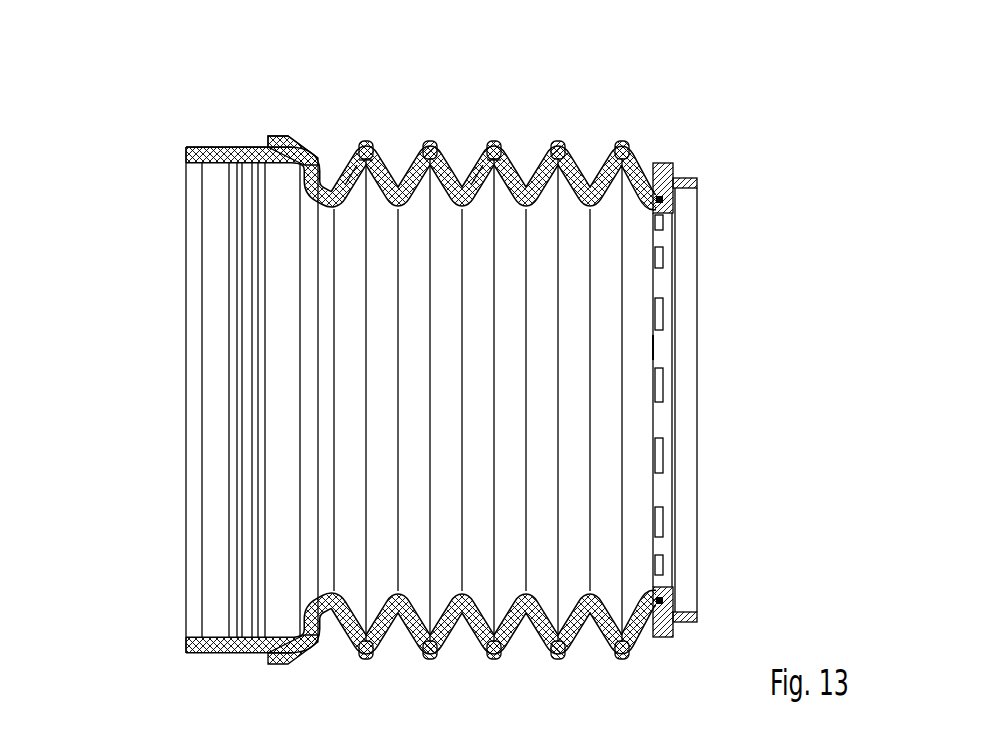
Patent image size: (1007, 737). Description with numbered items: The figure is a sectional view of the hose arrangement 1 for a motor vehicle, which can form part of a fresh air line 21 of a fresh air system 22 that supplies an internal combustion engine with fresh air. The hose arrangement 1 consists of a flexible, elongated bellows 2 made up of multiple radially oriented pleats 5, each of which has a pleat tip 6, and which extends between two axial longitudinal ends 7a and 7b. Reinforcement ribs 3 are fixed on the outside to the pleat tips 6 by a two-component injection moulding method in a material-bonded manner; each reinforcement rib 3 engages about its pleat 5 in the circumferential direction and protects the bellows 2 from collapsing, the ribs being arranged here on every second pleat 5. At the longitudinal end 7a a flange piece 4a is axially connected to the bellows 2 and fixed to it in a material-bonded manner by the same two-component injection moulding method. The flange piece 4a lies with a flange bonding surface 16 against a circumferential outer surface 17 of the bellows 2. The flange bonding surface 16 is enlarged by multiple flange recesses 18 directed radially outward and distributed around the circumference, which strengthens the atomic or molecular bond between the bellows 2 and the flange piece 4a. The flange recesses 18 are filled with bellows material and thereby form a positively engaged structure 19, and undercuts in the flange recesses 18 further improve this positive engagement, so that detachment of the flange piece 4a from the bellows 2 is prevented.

The hose arrangement 1 is at (777, 170).
The bellows 2 is at (421, 339).
The reinforcement rib 3 is at (430, 141).
The flange piece 4a is at (690, 170).
The pleat 5 is at (384, 150).
The pleat tip 6 is at (357, 156).
The longitudinal end 7a is at (750, 400).
The longitudinal end 7b is at (142, 405).
The flange bonding surface 16 is at (654, 348).
The surface 17 is at (661, 281).
The flange recess 18 is at (659, 313).
The positively engaged structure 19 is at (666, 450).
The fresh air line 21 is at (209, 90).
The fresh air system 22 is at (252, 400).